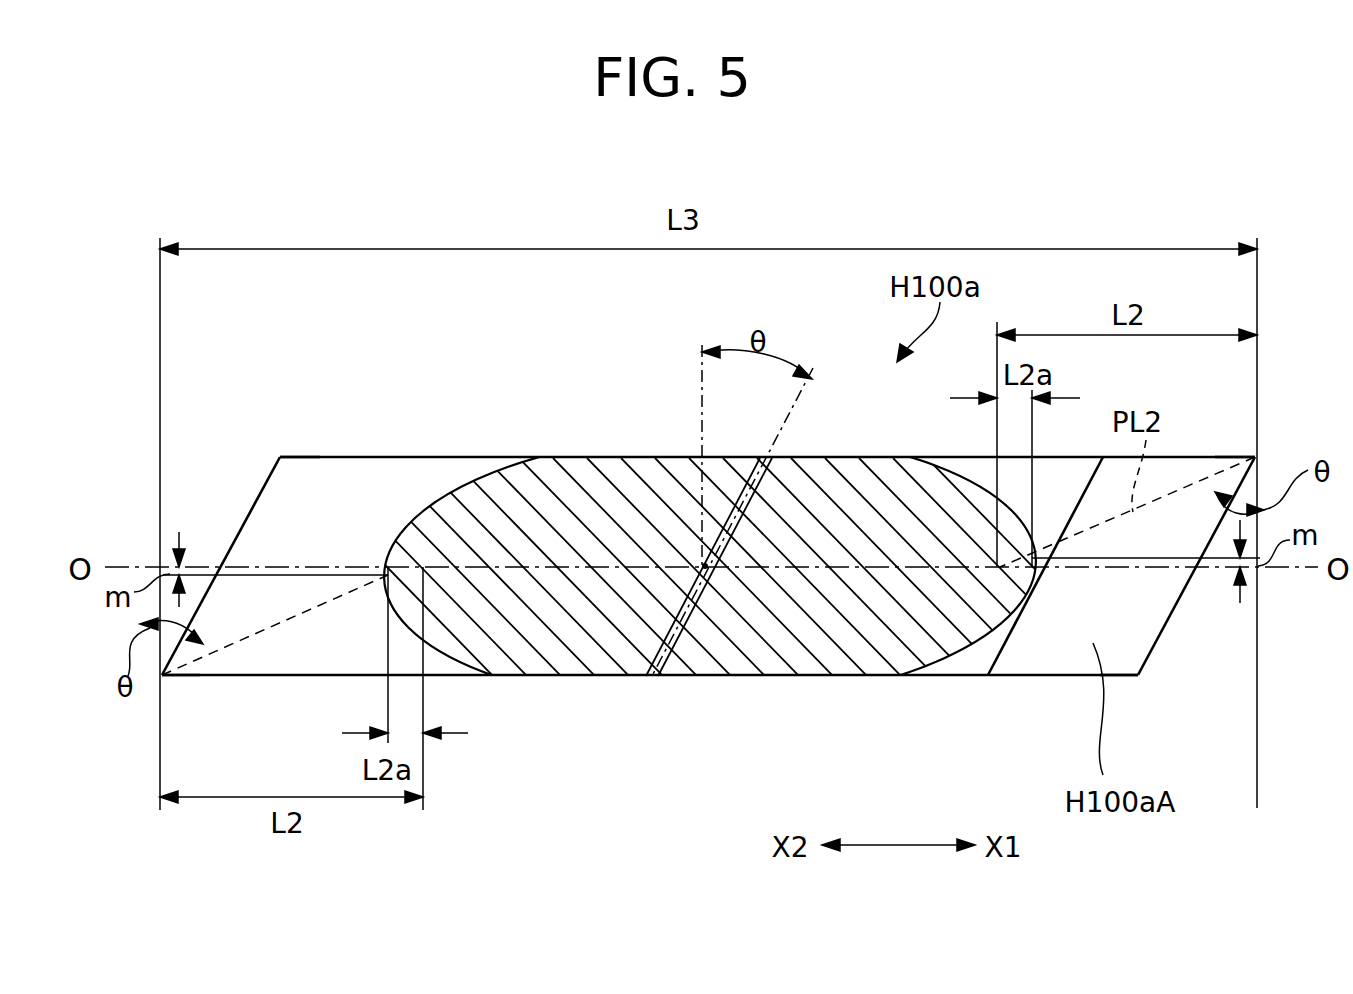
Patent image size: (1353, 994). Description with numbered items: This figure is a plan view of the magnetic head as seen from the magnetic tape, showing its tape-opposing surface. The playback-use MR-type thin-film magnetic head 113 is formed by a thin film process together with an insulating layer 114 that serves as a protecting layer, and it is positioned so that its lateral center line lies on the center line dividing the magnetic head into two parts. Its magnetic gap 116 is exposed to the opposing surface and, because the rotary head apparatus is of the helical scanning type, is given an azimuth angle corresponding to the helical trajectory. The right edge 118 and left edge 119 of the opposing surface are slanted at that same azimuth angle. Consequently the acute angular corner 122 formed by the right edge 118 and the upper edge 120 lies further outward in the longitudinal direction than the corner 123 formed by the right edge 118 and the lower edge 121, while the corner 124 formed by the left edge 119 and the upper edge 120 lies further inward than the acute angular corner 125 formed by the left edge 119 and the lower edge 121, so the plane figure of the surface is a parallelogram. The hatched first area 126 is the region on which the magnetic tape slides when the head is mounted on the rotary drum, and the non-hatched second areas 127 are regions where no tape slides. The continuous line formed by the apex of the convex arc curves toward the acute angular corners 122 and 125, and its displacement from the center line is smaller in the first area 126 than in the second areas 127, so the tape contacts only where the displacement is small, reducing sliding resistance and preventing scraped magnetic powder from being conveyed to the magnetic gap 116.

The MR-type thin-film magnetic head 113 is at (708, 560).
The insulating layer 114 is at (767, 457).
The magnetic gap 116 is at (707, 562).
The right edge 118 is at (1154, 645).
The left edge 119 is at (258, 497).
The upper edge 120 is at (1190, 456).
The lower edge 121 is at (218, 677).
The acute angular corner 122 is at (1258, 457).
The corner 123 is at (1140, 676).
The corner 124 is at (280, 456).
The acute angular corner 125 is at (160, 678).
The first area 126 is at (798, 652).
The second areas 127 is at (295, 648).